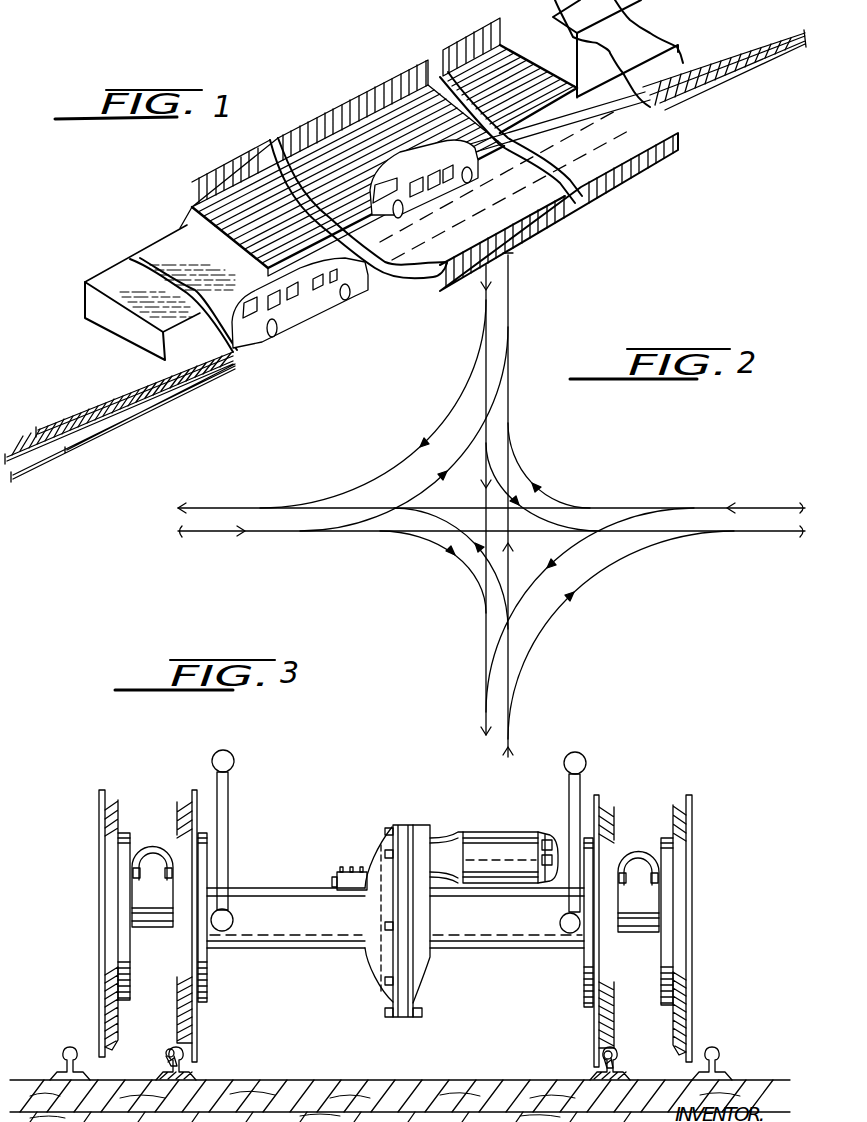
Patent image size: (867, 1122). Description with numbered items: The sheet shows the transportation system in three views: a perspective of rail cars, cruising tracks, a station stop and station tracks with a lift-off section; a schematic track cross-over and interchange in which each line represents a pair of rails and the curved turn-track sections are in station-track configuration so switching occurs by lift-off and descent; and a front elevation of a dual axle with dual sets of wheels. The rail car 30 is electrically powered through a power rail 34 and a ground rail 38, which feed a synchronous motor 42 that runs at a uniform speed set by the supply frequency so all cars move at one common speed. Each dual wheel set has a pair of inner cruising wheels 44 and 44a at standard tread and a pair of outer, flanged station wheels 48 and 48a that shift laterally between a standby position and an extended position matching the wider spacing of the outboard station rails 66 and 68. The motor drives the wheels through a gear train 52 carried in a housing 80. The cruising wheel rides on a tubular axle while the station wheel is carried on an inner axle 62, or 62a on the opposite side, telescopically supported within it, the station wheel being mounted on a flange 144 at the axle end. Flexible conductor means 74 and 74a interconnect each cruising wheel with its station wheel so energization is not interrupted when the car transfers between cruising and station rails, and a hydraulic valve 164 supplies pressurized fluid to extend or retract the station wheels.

In FIG. 1, the rail car 30 is at (322, 310).
In FIG. 3, the power rail 34 is at (165, 1053).
In FIG. 3, the ground rail 38 is at (619, 1055).
In FIG. 3, the synchronous motor 42 is at (493, 843).
In FIG. 3, the cruising wheel 44 is at (185, 1025).
In FIG. 3, the cruising wheel 44a is at (612, 1023).
In FIG. 3, the station wheel 48 is at (105, 1020).
In FIG. 3, the station wheel 48a is at (678, 980).
In FIG. 3, the gear train 52 is at (418, 813).
In FIG. 3, the inner axle 62 is at (152, 914).
In FIG. 3, the telescoping axle 62a is at (640, 926).
In FIG. 3, the station rail 66 is at (66, 1056).
In FIG. 3, the station rail 68 is at (712, 1054).
In FIG. 3, the flexible conductor means 74 is at (148, 845).
In FIG. 3, the flexible conductor means 74a is at (642, 850).
In FIG. 3, the housing 80 is at (270, 958).
In FIG. 3, the flange 144 is at (122, 833).
In FIG. 3, the hydraulic valve 164 is at (350, 856).